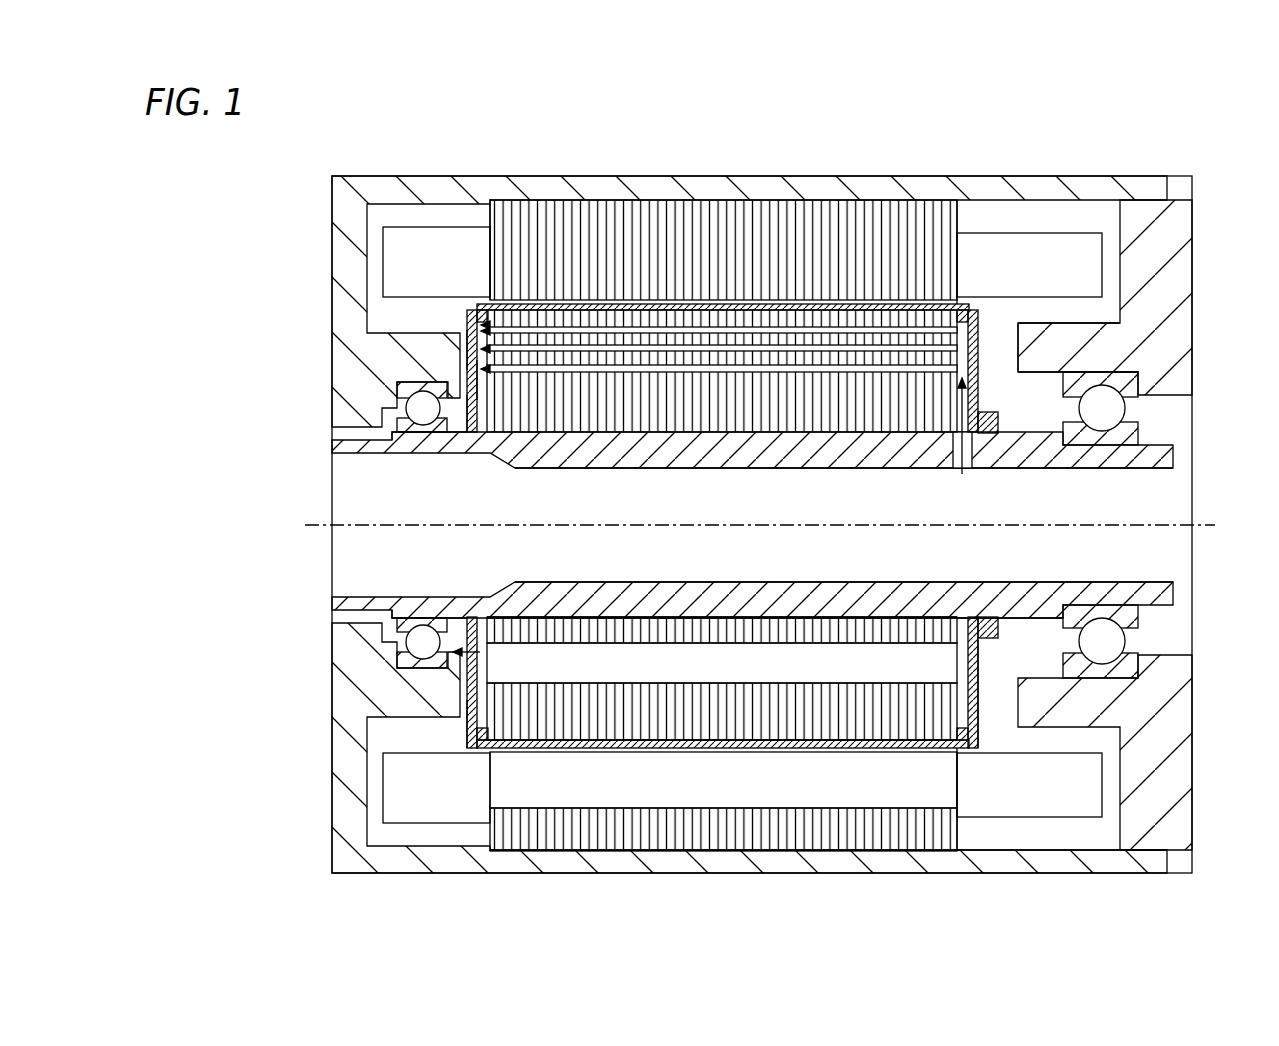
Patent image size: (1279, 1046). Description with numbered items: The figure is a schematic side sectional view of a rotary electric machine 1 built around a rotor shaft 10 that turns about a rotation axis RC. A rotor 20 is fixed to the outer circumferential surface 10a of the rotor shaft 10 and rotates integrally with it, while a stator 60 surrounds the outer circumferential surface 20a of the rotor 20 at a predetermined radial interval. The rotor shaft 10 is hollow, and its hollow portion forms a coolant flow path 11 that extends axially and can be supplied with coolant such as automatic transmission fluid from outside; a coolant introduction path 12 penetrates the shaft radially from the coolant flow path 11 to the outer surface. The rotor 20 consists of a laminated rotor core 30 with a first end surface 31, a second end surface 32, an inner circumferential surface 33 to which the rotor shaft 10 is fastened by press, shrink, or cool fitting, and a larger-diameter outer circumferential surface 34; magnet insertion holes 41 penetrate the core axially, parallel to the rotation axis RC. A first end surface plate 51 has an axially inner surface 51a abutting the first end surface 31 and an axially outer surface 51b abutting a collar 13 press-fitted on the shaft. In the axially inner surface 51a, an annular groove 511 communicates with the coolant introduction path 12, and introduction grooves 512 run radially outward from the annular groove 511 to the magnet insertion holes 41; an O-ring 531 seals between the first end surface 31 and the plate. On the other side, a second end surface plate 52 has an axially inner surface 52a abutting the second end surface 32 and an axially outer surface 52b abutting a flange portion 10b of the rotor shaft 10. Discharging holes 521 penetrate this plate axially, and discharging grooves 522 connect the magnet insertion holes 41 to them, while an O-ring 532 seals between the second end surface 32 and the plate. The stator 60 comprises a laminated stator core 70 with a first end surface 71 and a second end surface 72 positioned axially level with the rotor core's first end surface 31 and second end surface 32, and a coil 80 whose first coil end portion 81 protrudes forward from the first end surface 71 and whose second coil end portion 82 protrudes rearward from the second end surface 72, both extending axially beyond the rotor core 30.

The rotary electric machine 1 is at (872, 158).
The rotor shaft 10 is at (1160, 595).
The outer circumferential surface 10a is at (752, 630).
The flange portion 10b is at (455, 625).
The coolant flow path 11 is at (403, 508).
The coolant introduction path 12 is at (955, 452).
The collar 13 is at (990, 617).
The rotor 20 is at (415, 722).
The outer circumferential surface 20a is at (895, 752).
The rotor core 30 is at (615, 747).
The first end surface 31 is at (962, 697).
The second end surface 32 is at (463, 698).
The inner circumferential surface 33 is at (700, 598).
The outer circumferential surface 34 is at (708, 742).
The magnet insertion hole 41 is at (593, 358).
The first end surface plate 51 is at (1005, 335).
The axially inner surface 51a is at (962, 712).
The axially outer surface 51b is at (980, 700).
The annular groove 511 is at (1000, 422).
The introduction grooves 512 is at (978, 370).
The second end surface plate 52 is at (465, 332).
The axially inner surface 52a is at (462, 373).
The axially outer surface 52b is at (462, 352).
The discharging holes 521 is at (478, 662).
The discharging grooves 522 is at (462, 400).
The O-ring 531 is at (980, 316).
The O-ring 532 is at (478, 318).
The stator 60 is at (972, 224).
The stator core 70 is at (728, 225).
The first end surface 71 is at (958, 218).
The second end surface 72 is at (487, 222).
The coil 80 is at (793, 770).
The first coil end portion 81 is at (1070, 250).
The second coil end portion 82 is at (438, 250).
The rotation axis RC is at (1108, 528).